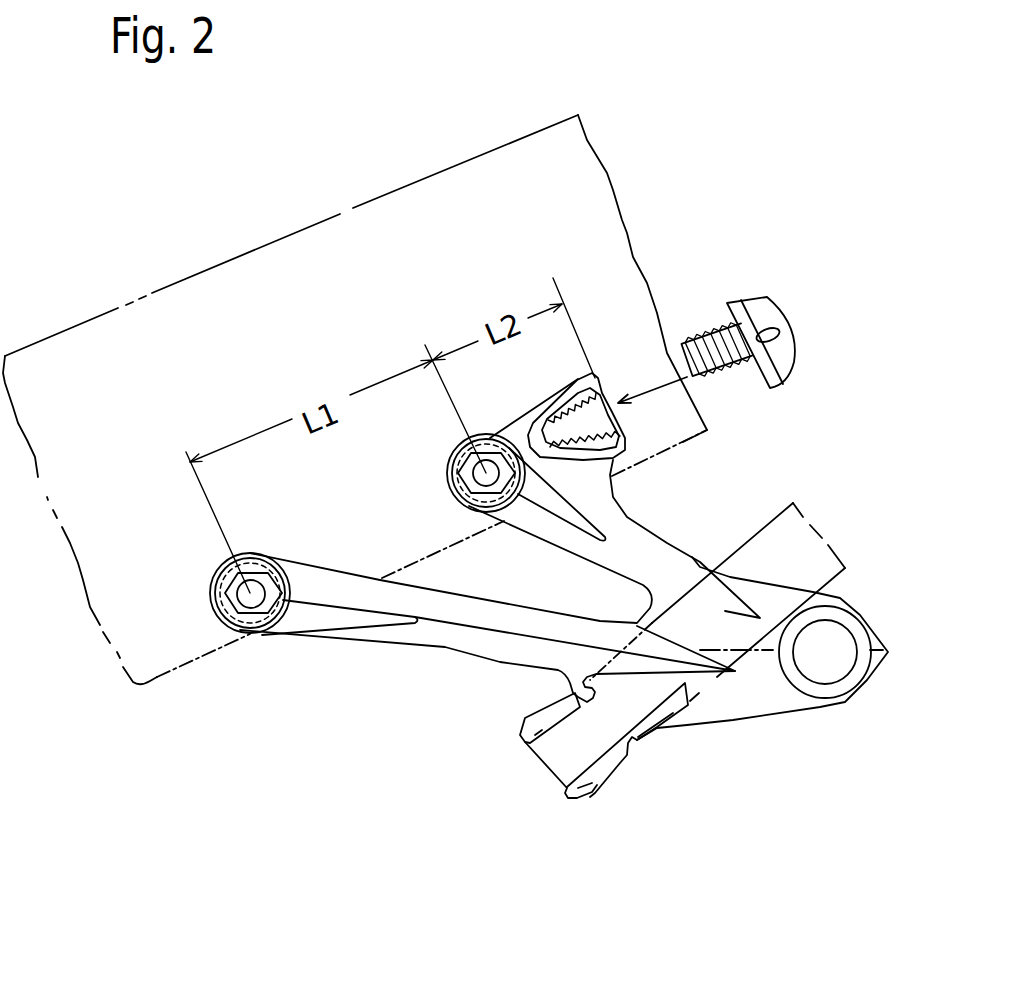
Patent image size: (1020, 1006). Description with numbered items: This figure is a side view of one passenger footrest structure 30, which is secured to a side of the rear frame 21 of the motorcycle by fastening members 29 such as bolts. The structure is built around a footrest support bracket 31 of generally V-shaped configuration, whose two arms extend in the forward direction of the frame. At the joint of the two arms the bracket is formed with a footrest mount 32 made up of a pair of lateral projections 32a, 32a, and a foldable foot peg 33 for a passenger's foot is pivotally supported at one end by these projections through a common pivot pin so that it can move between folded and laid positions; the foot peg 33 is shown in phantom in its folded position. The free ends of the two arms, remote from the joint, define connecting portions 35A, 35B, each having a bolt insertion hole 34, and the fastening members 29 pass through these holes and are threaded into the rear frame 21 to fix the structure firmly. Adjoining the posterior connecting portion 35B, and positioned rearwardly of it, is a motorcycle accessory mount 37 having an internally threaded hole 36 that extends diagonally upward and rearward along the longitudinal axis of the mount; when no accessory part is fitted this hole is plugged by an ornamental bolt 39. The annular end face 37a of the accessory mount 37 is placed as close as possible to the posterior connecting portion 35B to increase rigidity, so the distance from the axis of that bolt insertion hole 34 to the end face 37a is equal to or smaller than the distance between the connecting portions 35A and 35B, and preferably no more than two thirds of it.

The rear frame 21 is at (535, 133).
The fastening member 29 is at (258, 617).
The passenger footrest structure 30 is at (436, 698).
The footrest support bracket 31 is at (660, 545).
The footrest mount 32 is at (406, 793).
The lateral projections 32a is at (570, 799).
The foldable foot peg 33 is at (793, 503).
The bolt insertion hole 34 is at (248, 600).
The connecting portion 35A is at (210, 590).
The posterior connecting portion 35B is at (450, 497).
The internally threaded hole 36 is at (620, 400).
The motorcycle accessory mount 37 is at (568, 394).
The annular end face 37a is at (603, 373).
The ornamental bolt 39 is at (767, 310).